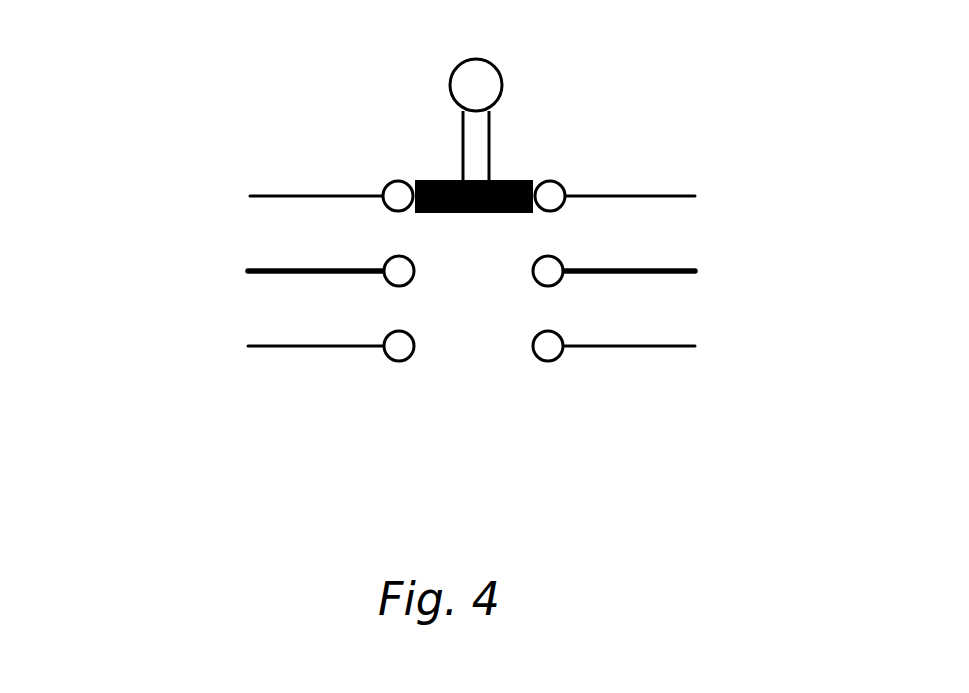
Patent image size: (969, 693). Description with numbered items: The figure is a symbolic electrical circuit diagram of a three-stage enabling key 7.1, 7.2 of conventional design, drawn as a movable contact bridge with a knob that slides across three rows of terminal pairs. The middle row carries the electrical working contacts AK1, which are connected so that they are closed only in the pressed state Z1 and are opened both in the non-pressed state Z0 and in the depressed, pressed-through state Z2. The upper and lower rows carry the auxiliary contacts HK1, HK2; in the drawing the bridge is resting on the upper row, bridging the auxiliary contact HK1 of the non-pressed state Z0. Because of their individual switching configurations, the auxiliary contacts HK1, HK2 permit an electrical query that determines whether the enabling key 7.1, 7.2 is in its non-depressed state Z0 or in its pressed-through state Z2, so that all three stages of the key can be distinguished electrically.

The three-stage enabling key 7.1 is at (582, 109).
The three-stage enabling key 7.2 is at (527, 88).
The auxiliary contact HK1 is at (474, 197).
The working contact AK1 is at (474, 272).
The auxiliary contact HK2 is at (474, 347).
The non-pressed state Z0 is at (474, 197).
The pressed state Z1 is at (474, 272).
The depressed state Z2 is at (474, 347).